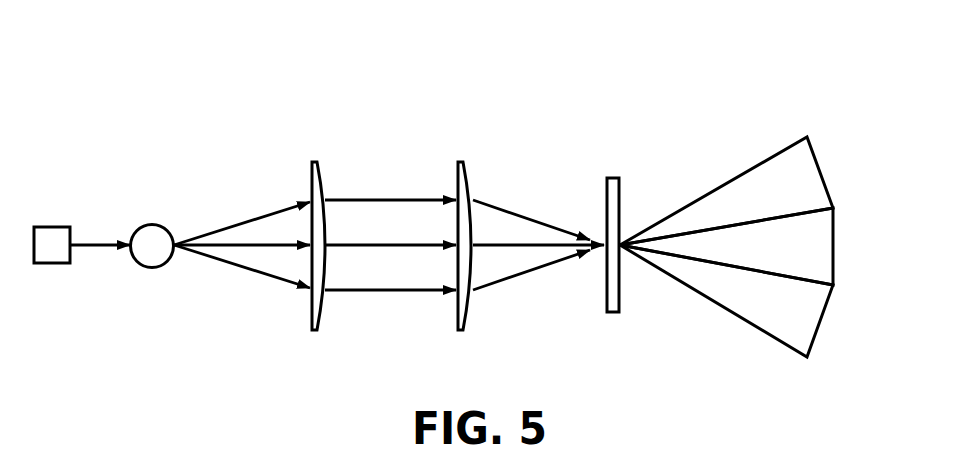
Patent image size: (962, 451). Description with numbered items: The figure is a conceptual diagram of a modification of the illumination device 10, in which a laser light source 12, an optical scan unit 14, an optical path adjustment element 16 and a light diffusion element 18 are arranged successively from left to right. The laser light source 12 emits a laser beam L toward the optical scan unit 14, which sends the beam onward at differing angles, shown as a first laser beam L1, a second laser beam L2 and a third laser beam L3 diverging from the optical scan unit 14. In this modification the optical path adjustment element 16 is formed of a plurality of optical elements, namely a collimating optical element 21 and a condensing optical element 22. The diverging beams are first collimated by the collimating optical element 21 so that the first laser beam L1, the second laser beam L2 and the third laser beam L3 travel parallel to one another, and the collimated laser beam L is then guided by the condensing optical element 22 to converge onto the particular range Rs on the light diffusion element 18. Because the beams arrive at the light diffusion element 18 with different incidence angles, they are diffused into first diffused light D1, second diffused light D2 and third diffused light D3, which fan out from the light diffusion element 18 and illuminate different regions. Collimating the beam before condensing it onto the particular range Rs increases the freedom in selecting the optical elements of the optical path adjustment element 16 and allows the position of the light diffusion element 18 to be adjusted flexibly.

The illumination device 10 is at (727, 75).
The laser light source 12 is at (53, 231).
The optical scan unit 14 is at (152, 226).
The optical path adjustment element 16 is at (410, 218).
The collimating optical element 21 is at (313, 161).
The condensing optical element 22 is at (460, 161).
The light diffusion element 18 is at (612, 178).
The laser beam L is at (96, 243).
The first laser beam L1 is at (240, 243).
The second laser beam L2 is at (256, 218).
The third laser beam L3 is at (255, 272).
The particular range Rs is at (601, 252).
The first diffused light D1 is at (823, 247).
The second diffused light D2 is at (808, 317).
The third diffused light D3 is at (808, 172).